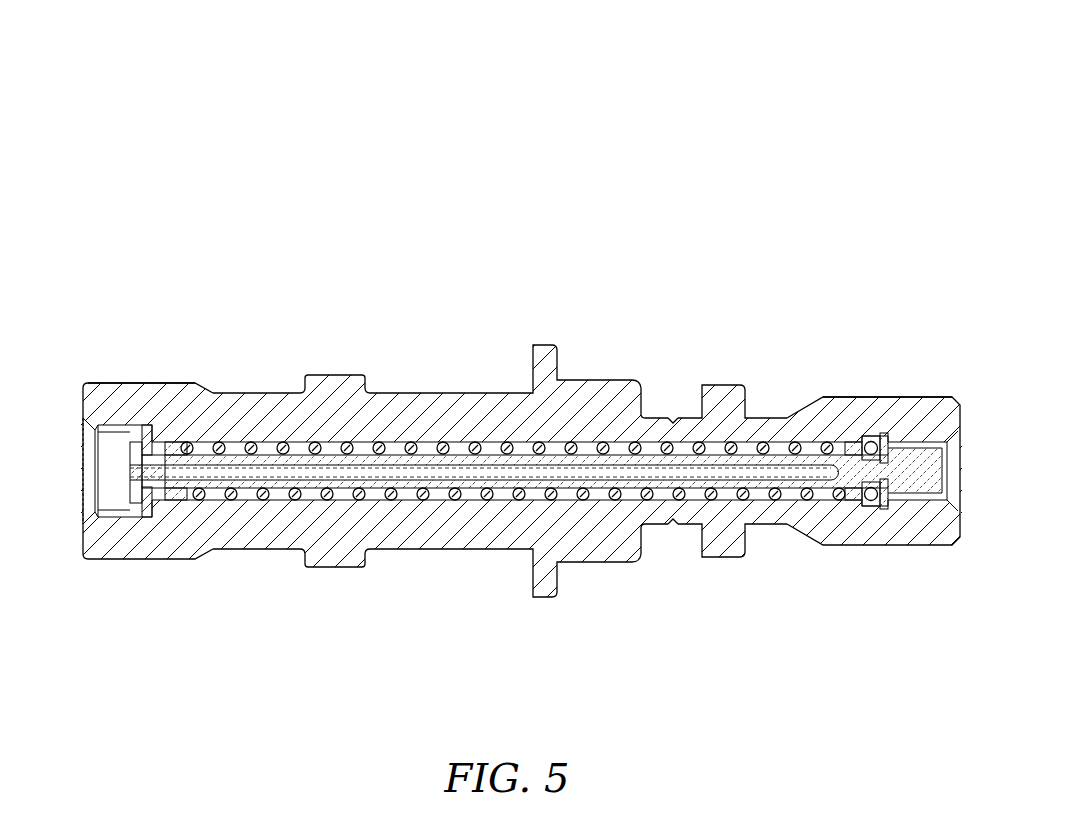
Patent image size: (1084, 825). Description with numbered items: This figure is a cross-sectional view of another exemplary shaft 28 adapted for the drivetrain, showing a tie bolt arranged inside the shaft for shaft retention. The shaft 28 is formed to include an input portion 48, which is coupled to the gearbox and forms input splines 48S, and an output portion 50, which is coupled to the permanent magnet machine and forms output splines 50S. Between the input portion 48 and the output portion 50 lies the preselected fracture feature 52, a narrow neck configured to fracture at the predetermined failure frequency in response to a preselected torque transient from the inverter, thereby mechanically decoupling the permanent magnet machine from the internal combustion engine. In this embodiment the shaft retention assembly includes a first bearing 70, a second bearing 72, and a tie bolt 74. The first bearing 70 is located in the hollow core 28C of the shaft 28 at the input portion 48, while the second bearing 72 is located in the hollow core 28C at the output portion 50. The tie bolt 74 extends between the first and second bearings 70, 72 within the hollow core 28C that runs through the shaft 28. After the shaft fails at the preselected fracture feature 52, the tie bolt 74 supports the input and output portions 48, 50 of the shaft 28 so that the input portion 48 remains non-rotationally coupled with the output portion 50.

The shaft 28 is at (502, 327).
The hollow core 28C is at (90, 476).
The input portion 48 is at (126, 377).
The input splines 48S is at (142, 384).
The output portion 50 is at (901, 387).
The output splines 50S is at (880, 397).
The preselected fracture feature 52 is at (673, 420).
The first bearing 70 is at (147, 420).
The second bearing 72 is at (868, 428).
The tie bolt 74 is at (460, 448).